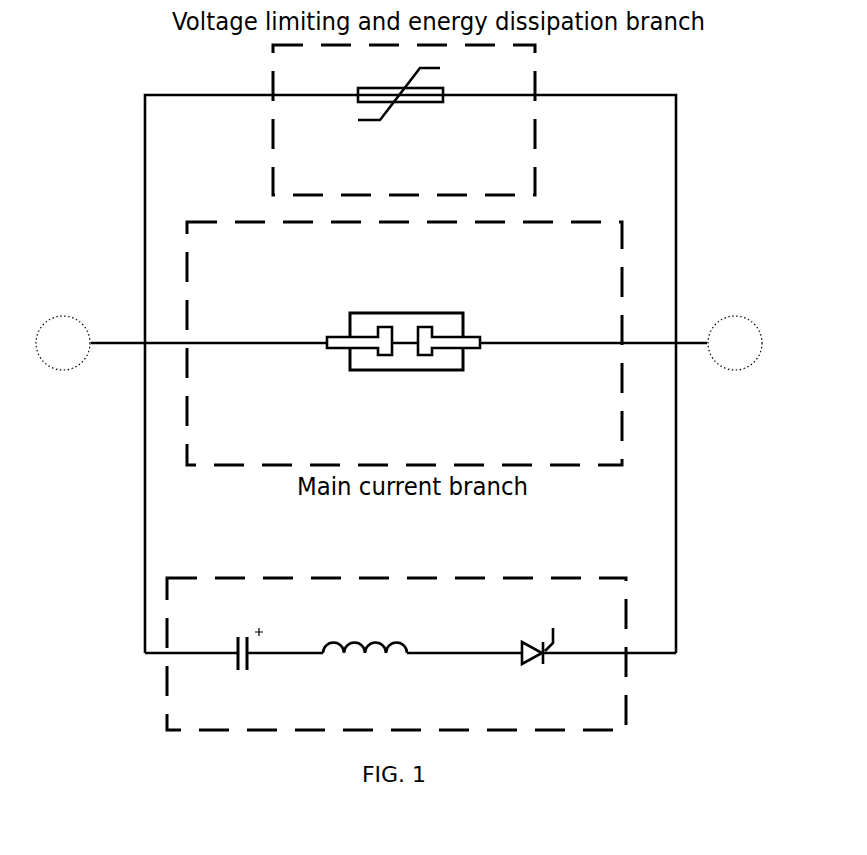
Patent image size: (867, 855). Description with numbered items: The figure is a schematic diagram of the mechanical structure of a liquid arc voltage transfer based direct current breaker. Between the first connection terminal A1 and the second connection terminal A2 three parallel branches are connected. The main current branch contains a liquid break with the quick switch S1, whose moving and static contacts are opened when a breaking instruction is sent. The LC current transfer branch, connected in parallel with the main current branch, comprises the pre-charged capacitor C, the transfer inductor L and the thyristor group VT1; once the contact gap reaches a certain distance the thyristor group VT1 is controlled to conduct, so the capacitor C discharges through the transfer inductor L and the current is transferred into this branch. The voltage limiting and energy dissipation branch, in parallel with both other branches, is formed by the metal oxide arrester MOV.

The first connection terminal A1 is at (63, 343).
The second connection terminal A2 is at (735, 343).
The metal oxide arrester MOV is at (400, 120).
The quick switch S1 is at (405, 349).
The capacitor C is at (248, 664).
The transfer inductor L is at (365, 671).
The thyristor group VT1 is at (556, 671).